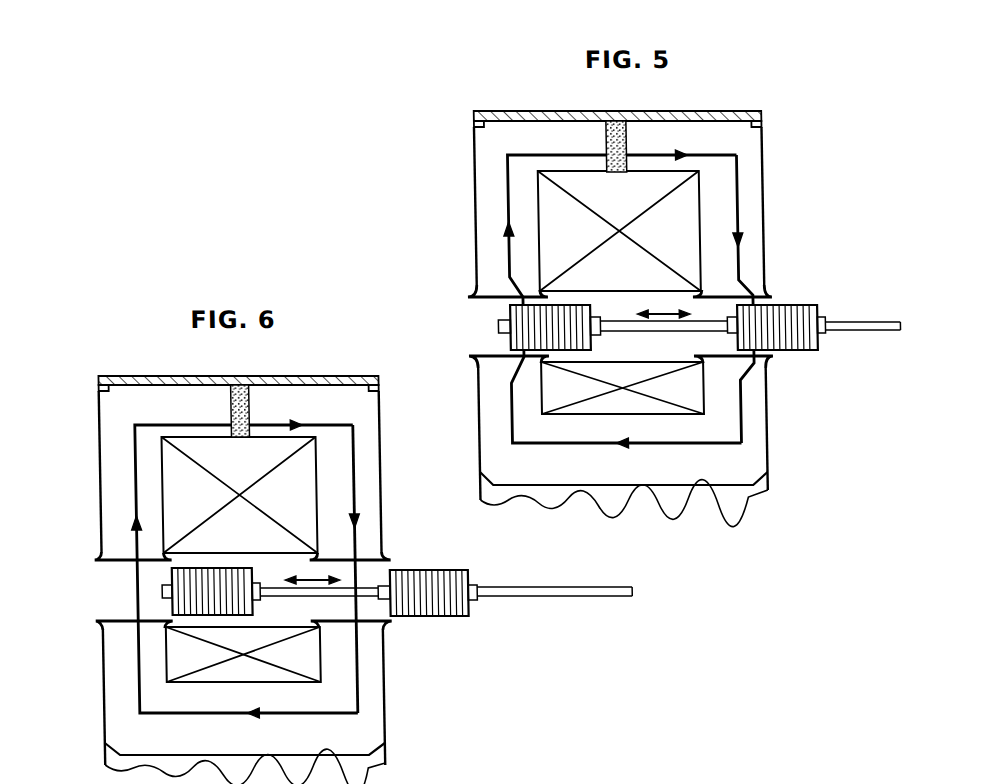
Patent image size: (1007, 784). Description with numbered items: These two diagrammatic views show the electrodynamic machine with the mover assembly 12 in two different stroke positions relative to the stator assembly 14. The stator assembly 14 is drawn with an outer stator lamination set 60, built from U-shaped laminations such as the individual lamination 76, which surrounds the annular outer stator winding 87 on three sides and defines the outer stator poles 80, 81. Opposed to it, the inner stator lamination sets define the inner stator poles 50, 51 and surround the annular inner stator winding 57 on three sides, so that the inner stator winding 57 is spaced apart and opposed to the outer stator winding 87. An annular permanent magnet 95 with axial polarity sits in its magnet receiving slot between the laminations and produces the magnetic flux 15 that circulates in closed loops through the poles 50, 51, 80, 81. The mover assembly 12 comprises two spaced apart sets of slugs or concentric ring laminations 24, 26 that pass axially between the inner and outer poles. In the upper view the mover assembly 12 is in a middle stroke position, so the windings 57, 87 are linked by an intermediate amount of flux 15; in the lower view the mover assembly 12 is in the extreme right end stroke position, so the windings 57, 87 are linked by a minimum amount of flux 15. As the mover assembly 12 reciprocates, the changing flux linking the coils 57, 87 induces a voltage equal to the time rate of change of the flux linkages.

In FIG. 5, the mover assembly 12 is at (862, 285).
In FIG. 6, the mover assembly 12 is at (495, 563).
In FIG. 5, the stator assembly 14 is at (781, 169).
In FIG. 6, the stator assembly 14 is at (386, 415).
In FIG. 5, the magnetic flux 15 is at (708, 152).
In FIG. 6, the magnetic flux 15 is at (320, 427).
In FIG. 5, the concentric ring lamination set 24 is at (458, 338).
In FIG. 6, the concentric ring lamination set 24 is at (88, 606).
In FIG. 5, the concentric ring lamination set 26 is at (790, 297).
In FIG. 6, the concentric ring lamination set 26 is at (460, 632).
In FIG. 5, the inner stator pole 50 is at (497, 363).
In FIG. 6, the inner stator pole 50 is at (118, 632).
In FIG. 5, the inner stator pole 51 is at (752, 381).
In FIG. 6, the inner stator pole 51 is at (368, 640).
In FIG. 5, the inner stator winding 57 is at (688, 402).
In FIG. 6, the inner stator winding 57 is at (300, 668).
In FIG. 5, the outer stator lamination set 60 is at (482, 177).
In FIG. 6, the outer stator lamination set 60 is at (117, 427).
In FIG. 5, the individual lamination 76 is at (491, 208).
In FIG. 6, the individual lamination 76 is at (121, 452).
In FIG. 5, the outer stator pole 80 is at (493, 277).
In FIG. 6, the outer stator pole 80 is at (122, 543).
In FIG. 5, the outer stator pole 81 is at (755, 261).
In FIG. 6, the outer stator pole 81 is at (382, 521).
In FIG. 5, the outer stator winding 87 is at (581, 182).
In FIG. 6, the outer stator winding 87 is at (206, 448).
In FIG. 5, the permanent magnet 95 is at (627, 152).
In FIG. 6, the permanent magnet 95 is at (240, 392).